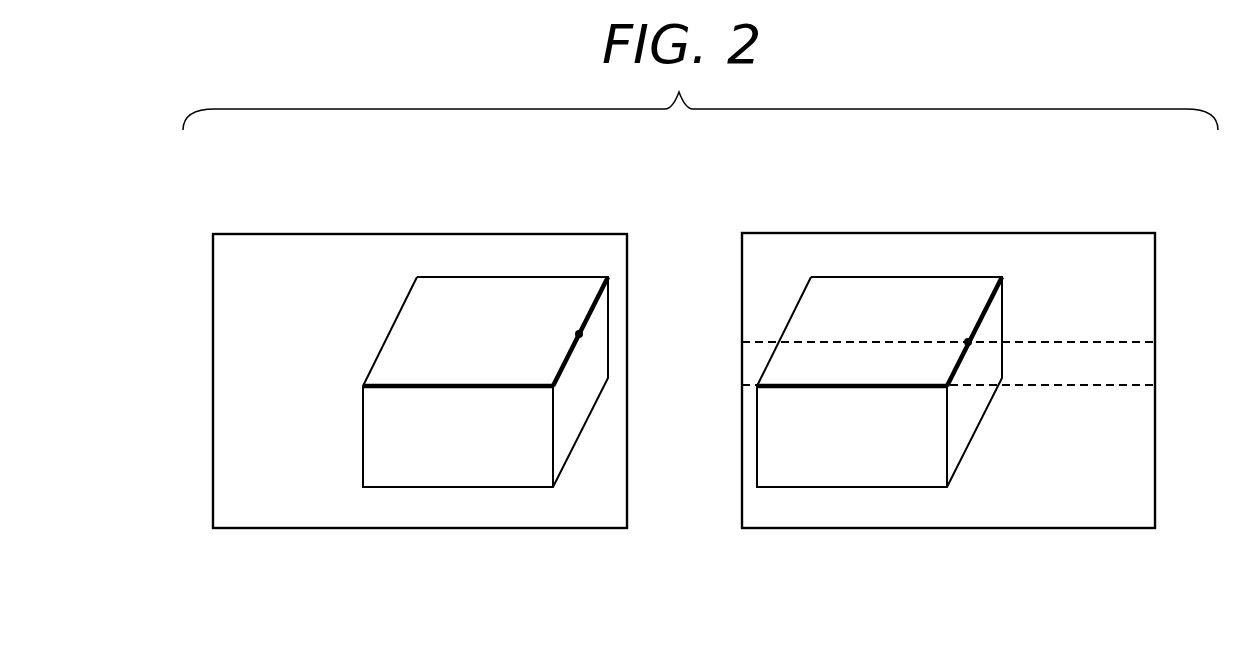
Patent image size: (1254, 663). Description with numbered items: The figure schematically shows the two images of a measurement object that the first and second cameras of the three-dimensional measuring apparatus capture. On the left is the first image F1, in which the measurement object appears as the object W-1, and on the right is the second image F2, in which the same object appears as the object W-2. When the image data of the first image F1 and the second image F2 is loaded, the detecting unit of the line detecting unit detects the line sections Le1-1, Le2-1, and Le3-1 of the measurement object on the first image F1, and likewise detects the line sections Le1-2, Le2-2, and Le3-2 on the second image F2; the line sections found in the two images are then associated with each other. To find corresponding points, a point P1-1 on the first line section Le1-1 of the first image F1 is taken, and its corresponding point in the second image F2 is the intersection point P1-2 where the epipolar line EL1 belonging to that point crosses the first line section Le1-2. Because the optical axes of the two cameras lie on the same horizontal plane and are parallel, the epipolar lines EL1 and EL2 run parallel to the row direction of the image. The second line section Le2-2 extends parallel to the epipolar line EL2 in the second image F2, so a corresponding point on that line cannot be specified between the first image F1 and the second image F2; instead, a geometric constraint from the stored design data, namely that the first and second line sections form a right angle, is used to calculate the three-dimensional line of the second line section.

The first image F1 is at (287, 232).
The measurement object on the first image W-1 is at (490, 262).
The first line section on the first image Le1-1 is at (585, 320).
The second line section on the first image Le2-1 is at (463, 387).
The third line section on the first image Le3-1 is at (555, 437).
The point on the first line section of the first image P1-1 is at (581, 336).
The second image F2 is at (1095, 232).
The measurement object on the second image W-2 is at (888, 262).
The first line section on the second image Le1-2 is at (990, 308).
The second line section on the second image Le2-2 is at (847, 387).
The third line section on the second image Le3-2 is at (948, 437).
The intersection point P1-2 is at (970, 344).
The epipolar line EL1 is at (1118, 342).
The epipolar line EL2 is at (1120, 387).